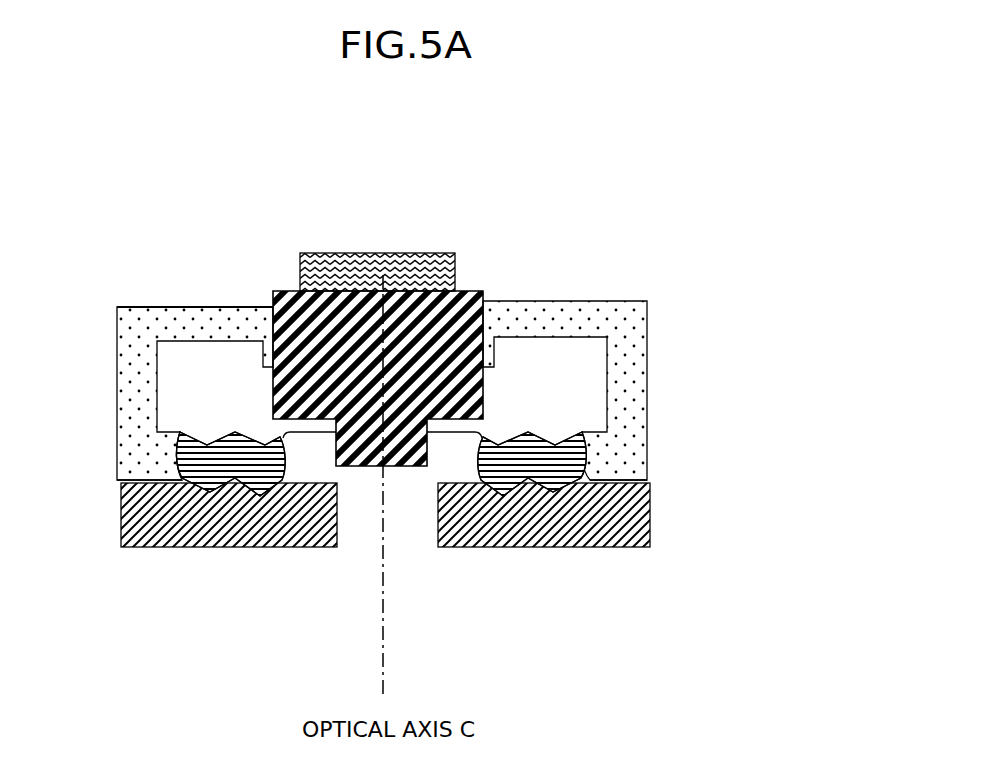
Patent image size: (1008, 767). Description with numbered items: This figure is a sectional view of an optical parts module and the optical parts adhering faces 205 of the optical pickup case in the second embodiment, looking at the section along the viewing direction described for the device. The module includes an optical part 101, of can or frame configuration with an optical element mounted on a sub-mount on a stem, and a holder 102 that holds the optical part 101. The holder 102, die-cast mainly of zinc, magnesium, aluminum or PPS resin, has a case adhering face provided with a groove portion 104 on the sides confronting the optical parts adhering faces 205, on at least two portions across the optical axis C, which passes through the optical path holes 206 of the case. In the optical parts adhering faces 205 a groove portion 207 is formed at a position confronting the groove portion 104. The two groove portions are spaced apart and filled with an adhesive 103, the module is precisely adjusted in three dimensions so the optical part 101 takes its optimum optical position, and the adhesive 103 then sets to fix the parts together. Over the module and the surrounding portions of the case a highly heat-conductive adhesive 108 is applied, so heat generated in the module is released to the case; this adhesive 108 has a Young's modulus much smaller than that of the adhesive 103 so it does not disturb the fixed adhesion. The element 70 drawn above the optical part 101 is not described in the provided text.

The shape memory alloy actuators 70a-70c 70 is at (392, 251).
The optical part 101 is at (485, 291).
The holder 102 is at (608, 337).
The adhesive 103 is at (178, 462).
The groove portion 104 is at (531, 430).
The highly heat-conductive adhesive 108 is at (161, 307).
The optical parts adhering faces 205 is at (633, 478).
The optical path holes 206 is at (360, 543).
The groove portion 207 is at (593, 468).